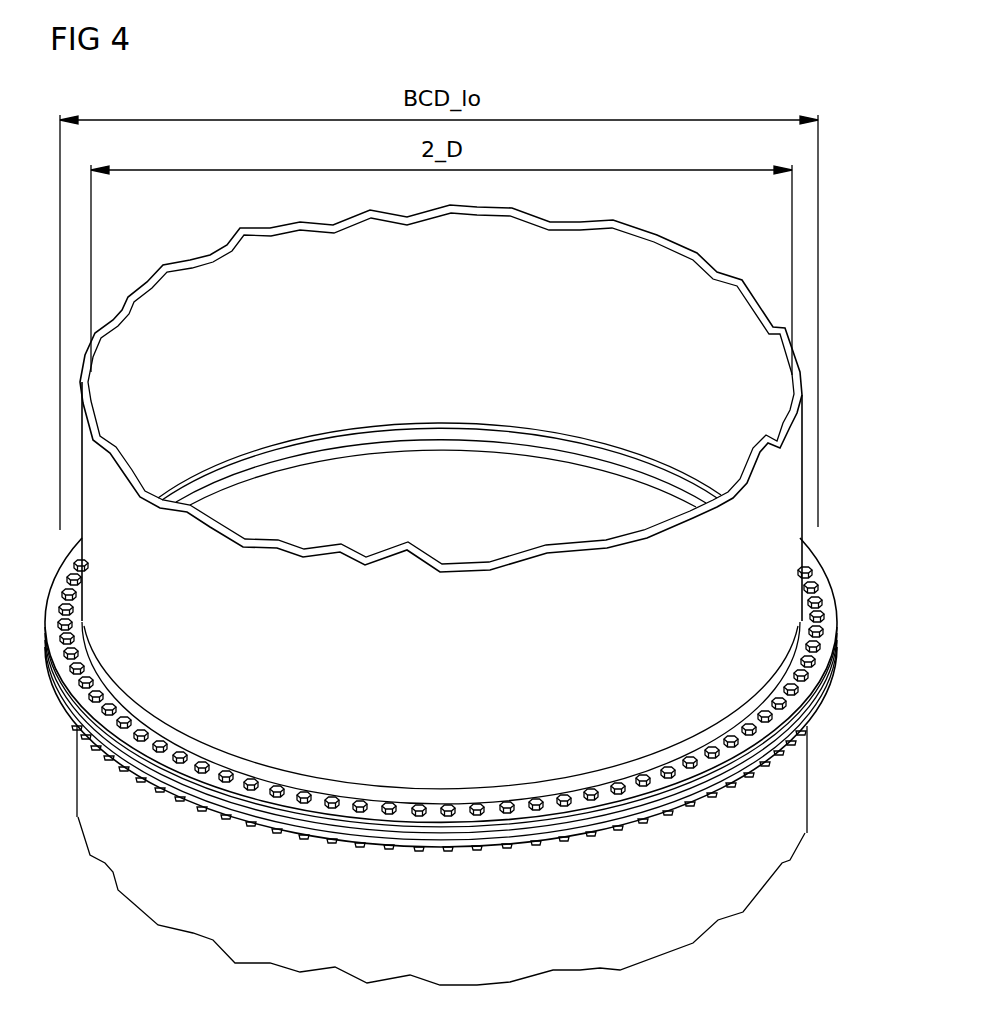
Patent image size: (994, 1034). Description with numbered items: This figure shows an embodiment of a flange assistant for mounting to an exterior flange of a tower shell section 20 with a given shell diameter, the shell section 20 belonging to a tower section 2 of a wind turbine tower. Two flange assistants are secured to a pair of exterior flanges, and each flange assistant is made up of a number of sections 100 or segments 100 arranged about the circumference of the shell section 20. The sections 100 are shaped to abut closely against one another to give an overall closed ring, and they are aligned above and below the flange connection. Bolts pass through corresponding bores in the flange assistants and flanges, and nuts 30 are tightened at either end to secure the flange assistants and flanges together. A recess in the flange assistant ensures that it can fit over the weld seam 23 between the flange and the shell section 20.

The tower section 2 is at (803, 437).
The shell section 20 is at (703, 292).
The weld seam 23 is at (520, 430).
The nut 30 is at (450, 803).
The section 100 is at (820, 574).